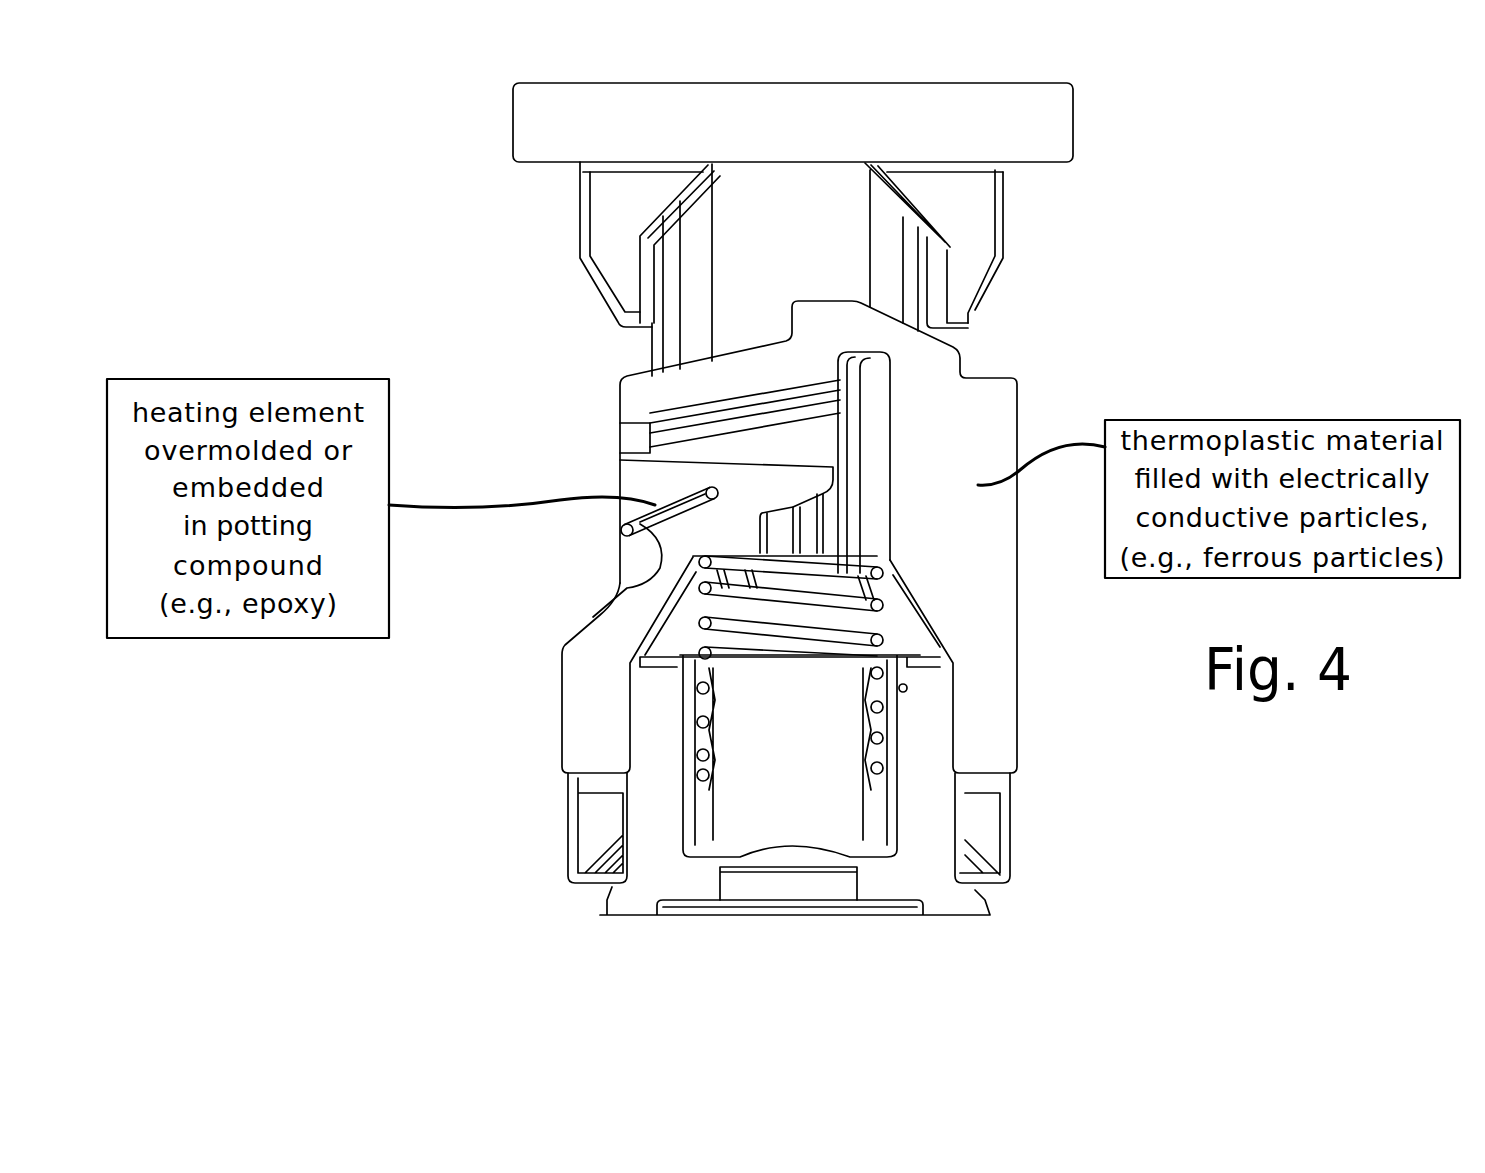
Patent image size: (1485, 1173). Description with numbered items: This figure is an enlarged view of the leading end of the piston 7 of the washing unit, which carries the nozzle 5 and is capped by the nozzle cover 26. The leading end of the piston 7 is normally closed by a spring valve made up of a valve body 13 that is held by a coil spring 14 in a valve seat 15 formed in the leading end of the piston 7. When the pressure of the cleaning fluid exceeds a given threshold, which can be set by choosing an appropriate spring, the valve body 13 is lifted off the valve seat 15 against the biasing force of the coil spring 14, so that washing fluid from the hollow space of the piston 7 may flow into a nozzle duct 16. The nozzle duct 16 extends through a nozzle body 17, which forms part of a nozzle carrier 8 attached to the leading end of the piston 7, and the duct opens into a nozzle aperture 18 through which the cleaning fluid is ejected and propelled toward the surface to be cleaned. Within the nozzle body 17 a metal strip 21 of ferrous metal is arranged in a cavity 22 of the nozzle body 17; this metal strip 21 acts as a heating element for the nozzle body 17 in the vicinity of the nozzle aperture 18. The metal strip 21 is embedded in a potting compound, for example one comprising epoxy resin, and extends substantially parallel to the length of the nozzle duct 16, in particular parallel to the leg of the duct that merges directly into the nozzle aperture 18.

The nozzle cover 26 is at (1014, 112).
The nozzle 5 is at (896, 511).
The nozzle carrier 8 is at (962, 395).
The nozzle body 17 is at (980, 460).
The nozzle duct 16 is at (687, 416).
The nozzle aperture 18 is at (603, 446).
The metal strip 21 is at (610, 515).
The cavity 22 is at (615, 582).
The coil spring 14 is at (905, 630).
The valve body 13 is at (747, 813).
The piston 7 is at (940, 907).
The valve seat 15 is at (972, 897).